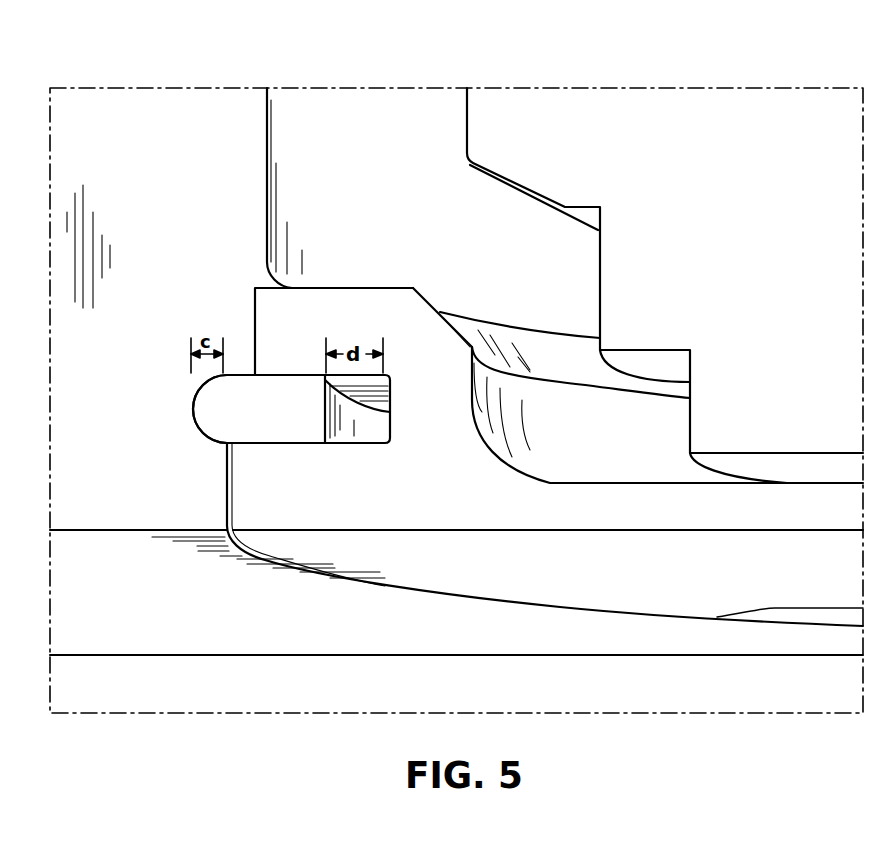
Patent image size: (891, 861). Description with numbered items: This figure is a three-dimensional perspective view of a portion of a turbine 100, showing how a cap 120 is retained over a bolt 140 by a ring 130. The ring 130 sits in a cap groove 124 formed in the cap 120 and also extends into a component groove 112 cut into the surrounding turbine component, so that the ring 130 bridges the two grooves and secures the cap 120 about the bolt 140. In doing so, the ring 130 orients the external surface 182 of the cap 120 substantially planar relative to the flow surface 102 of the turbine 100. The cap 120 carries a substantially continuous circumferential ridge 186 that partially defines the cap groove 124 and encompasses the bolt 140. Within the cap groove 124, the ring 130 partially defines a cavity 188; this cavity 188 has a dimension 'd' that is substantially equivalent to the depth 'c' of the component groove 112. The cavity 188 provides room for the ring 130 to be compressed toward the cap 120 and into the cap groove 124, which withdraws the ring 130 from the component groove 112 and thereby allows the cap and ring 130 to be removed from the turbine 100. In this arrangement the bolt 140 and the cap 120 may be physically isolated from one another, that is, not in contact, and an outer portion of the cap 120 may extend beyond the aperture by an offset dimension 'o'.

The turbine 100 is at (113, 147).
The flow surface 102 is at (192, 612).
The component groove 112 is at (203, 430).
The cap 120 is at (633, 517).
The cap groove 124 is at (378, 436).
The ring 130 is at (277, 422).
The bolt 140 is at (808, 152).
The external surface 182 is at (573, 575).
The circumferential ridge 186 is at (422, 333).
The cavity 188 is at (352, 420).